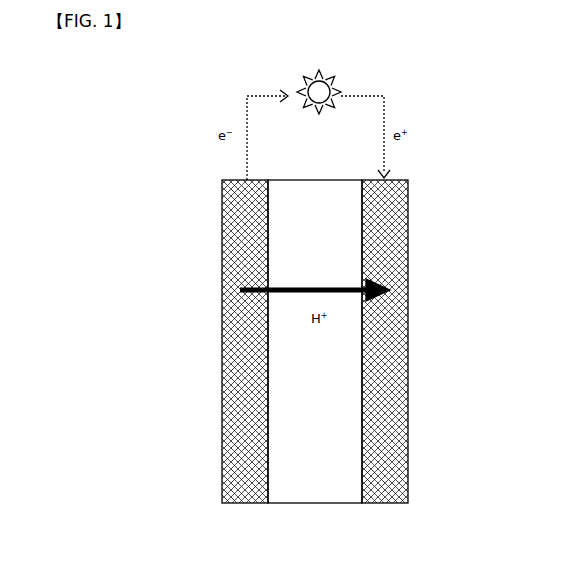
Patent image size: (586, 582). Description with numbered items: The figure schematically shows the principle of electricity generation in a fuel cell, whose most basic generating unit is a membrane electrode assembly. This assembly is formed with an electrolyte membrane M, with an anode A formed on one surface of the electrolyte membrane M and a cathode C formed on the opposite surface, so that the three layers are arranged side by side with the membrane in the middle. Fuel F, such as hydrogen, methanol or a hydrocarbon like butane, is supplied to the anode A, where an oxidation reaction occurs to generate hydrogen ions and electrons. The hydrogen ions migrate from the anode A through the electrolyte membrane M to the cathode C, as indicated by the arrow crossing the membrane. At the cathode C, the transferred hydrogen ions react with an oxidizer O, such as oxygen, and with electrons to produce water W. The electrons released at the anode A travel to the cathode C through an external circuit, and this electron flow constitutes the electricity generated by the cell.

The anode A is at (245, 503).
The electrolyte membrane M is at (314, 503).
The cathode C is at (388, 503).
The fuel F is at (210, 327).
The oxidizer O is at (420, 327).
The water W is at (415, 374).